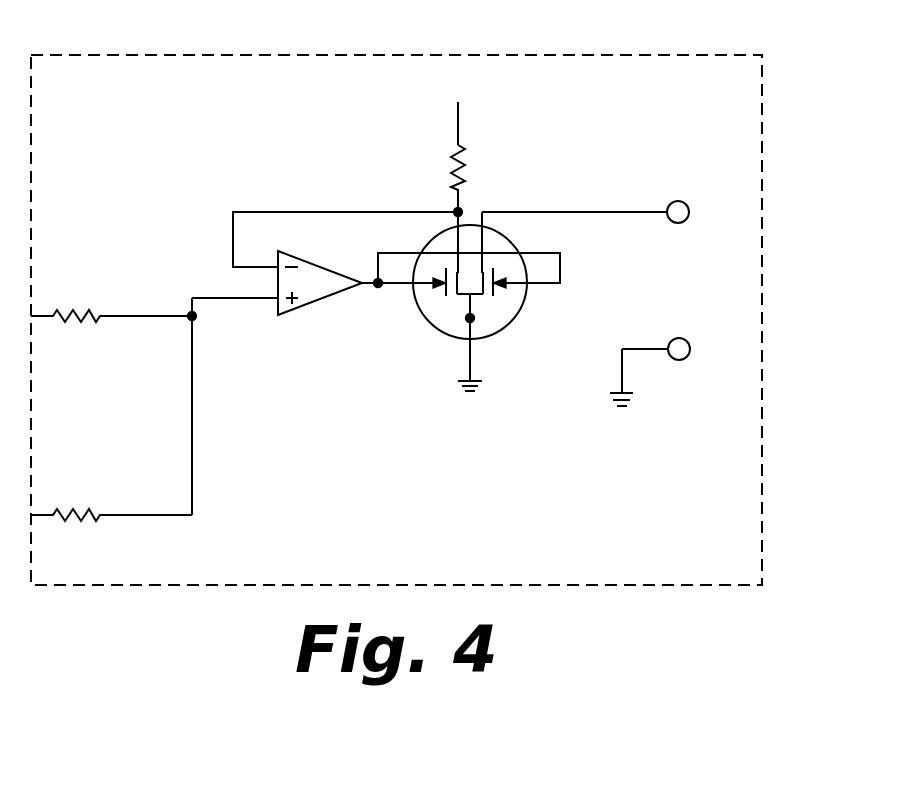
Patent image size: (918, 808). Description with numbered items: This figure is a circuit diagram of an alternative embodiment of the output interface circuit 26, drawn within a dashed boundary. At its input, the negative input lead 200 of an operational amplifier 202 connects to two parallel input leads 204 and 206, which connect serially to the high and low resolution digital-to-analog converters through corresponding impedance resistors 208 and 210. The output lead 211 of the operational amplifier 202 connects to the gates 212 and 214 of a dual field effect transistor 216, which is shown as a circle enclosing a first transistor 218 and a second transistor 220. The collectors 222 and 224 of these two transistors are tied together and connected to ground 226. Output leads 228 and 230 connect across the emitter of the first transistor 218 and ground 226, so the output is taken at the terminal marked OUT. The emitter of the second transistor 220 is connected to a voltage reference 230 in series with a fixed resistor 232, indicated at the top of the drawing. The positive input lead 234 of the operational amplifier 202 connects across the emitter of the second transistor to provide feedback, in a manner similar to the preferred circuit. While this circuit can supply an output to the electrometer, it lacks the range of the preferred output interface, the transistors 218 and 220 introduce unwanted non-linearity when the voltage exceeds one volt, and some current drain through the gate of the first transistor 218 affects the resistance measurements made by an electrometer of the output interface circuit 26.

The output interface circuit 26 is at (763, 490).
The negative input lead 200 is at (278, 298).
The operational amplifier 202 is at (320, 302).
The input lead 204 is at (153, 320).
The input lead 206 is at (145, 518).
The impedance resistor 208 is at (70, 320).
The impedance resistor 210 is at (77, 510).
The output lead 211 is at (378, 287).
The gate 212 is at (440, 295).
The gate 214 is at (500, 290).
The dual field effect transistor 216 is at (512, 243).
The first transistor 218 is at (500, 272).
The second transistor 220 is at (446, 270).
The collector 222 is at (462, 325).
The collector 224 is at (483, 325).
The ground 226 is at (468, 395).
The output lead 228 is at (680, 207).
The output lead / voltage reference 230 is at (460, 115).
The fixed resistor 232 is at (463, 160).
The positive input lead 234 is at (277, 265).